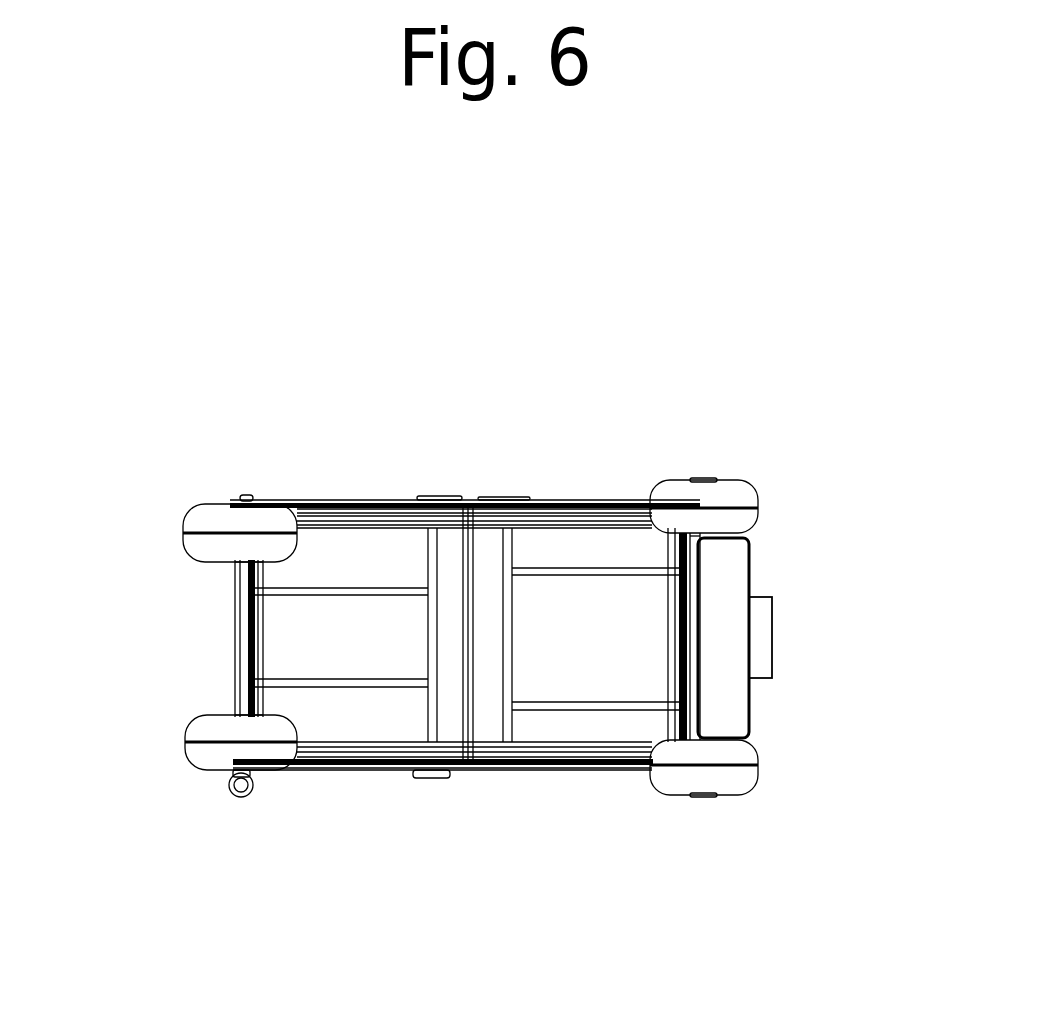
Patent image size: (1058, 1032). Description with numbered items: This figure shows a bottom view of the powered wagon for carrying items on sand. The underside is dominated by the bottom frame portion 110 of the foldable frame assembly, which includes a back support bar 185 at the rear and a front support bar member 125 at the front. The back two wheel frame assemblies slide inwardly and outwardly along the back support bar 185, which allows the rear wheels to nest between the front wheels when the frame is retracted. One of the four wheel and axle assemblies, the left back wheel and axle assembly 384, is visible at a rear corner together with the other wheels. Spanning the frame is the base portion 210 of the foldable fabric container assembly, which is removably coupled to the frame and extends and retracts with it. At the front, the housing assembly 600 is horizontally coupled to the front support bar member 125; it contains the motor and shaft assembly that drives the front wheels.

The bottom frame portion 110 is at (405, 768).
The back support bar 185 is at (247, 617).
The base portion 210 is at (562, 603).
The front support bar member 125 is at (697, 590).
The housing assembly 600 is at (730, 695).
The wheel and axle assembly 384 is at (217, 748).